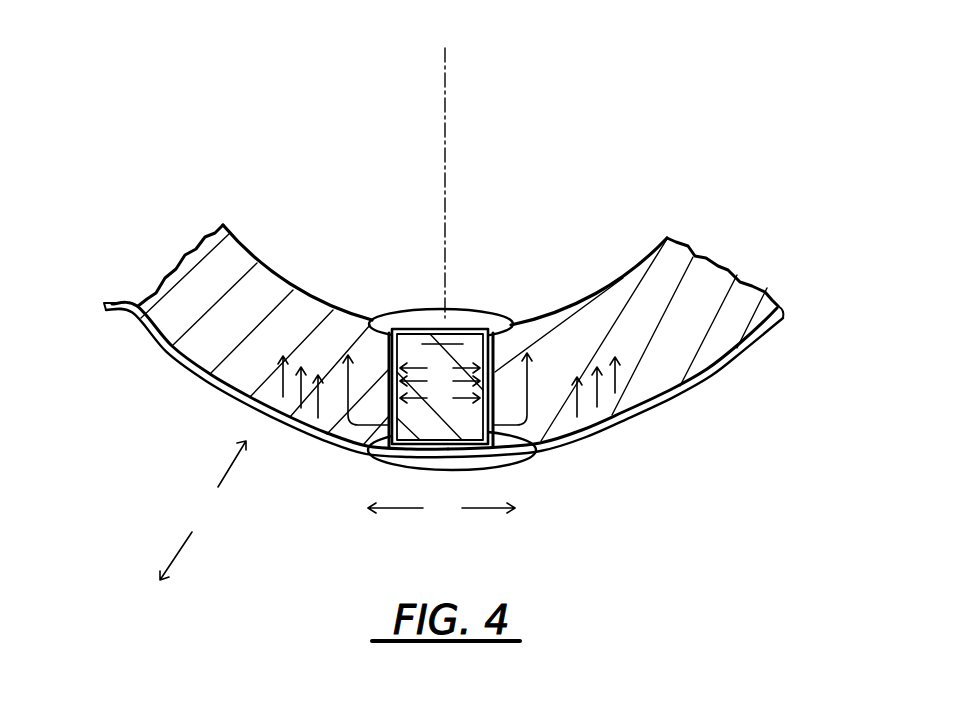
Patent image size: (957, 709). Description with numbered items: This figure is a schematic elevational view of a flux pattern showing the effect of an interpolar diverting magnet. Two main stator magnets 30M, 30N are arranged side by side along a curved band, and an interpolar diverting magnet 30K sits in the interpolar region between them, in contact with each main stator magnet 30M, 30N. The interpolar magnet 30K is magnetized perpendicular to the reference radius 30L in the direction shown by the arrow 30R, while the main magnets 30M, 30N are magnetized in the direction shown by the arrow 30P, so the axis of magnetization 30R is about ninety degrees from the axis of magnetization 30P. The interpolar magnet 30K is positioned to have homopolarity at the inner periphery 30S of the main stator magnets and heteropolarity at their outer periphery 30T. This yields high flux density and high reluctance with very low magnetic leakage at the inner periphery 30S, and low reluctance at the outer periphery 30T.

The reference radius 30L is at (452, 74).
The main stator magnet 30M is at (284, 268).
The main stator magnet 30N is at (623, 277).
The inner periphery 30S is at (420, 306).
The interpolar diverting magnet 30K is at (461, 328).
The outer periphery 30T is at (497, 461).
The axis of magnetization 30R is at (484, 512).
The axis of magnetization 30P is at (189, 533).